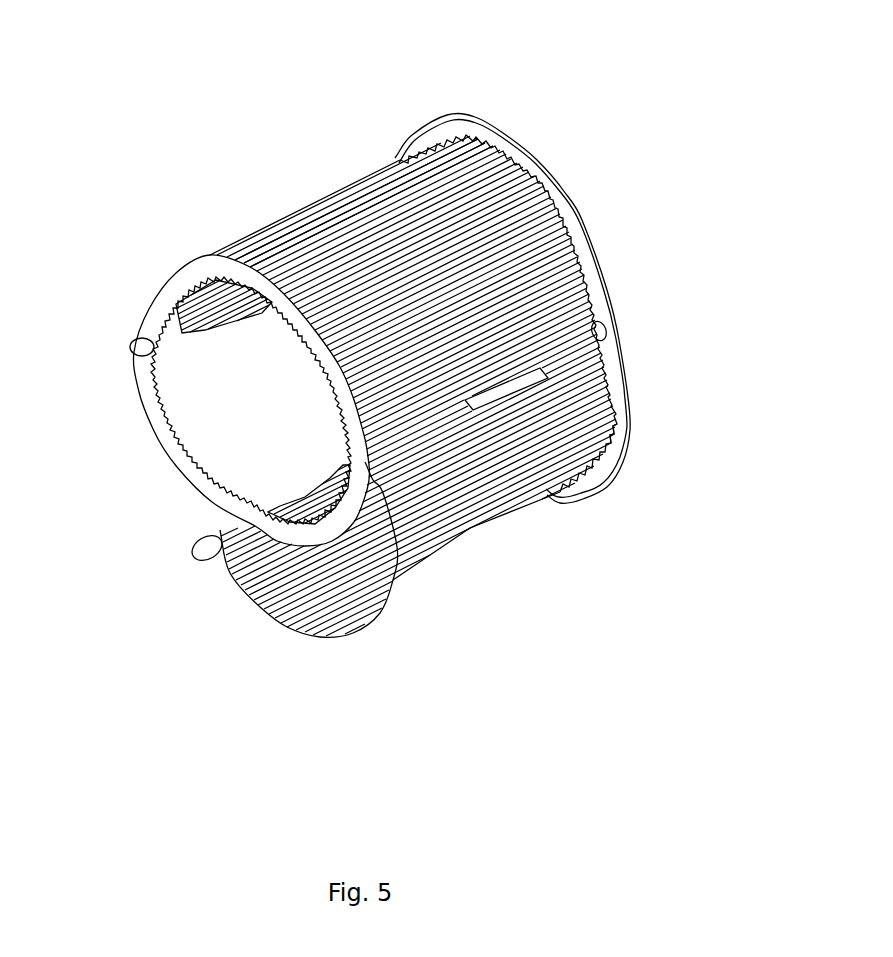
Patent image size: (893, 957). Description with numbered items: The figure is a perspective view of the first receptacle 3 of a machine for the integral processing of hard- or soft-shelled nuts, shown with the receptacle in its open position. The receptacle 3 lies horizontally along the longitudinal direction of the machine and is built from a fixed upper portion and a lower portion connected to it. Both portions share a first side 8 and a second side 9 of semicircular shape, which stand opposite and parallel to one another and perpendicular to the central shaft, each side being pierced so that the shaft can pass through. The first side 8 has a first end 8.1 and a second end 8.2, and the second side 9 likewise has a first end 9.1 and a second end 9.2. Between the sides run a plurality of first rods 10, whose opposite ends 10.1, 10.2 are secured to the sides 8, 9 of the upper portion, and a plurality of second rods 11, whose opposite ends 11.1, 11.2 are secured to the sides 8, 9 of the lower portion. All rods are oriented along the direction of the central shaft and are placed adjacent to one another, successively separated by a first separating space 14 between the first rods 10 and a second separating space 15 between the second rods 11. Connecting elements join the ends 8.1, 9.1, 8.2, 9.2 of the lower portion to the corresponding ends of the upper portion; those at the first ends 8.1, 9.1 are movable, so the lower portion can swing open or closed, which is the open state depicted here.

The first receptacle 3 is at (230, 160).
The first side 8 is at (205, 272).
The first end of first side 8.1 is at (140, 345).
The second end of first side 8.2 is at (428, 566).
The second side 9 is at (587, 210).
The first end of second side 9.1 is at (435, 270).
The second end of second side 9.2 is at (613, 347).
The first rods 10 is at (533, 270).
The first end of first rod 10.1 is at (157, 297).
The second end of first rod 10.2 is at (475, 210).
The second rods 11 is at (515, 517).
The first end of second rod 11.1 is at (300, 623).
The second end of second rod 11.2 is at (617, 432).
The first separating space 14 is at (595, 260).
The second separating space 15 is at (570, 417).